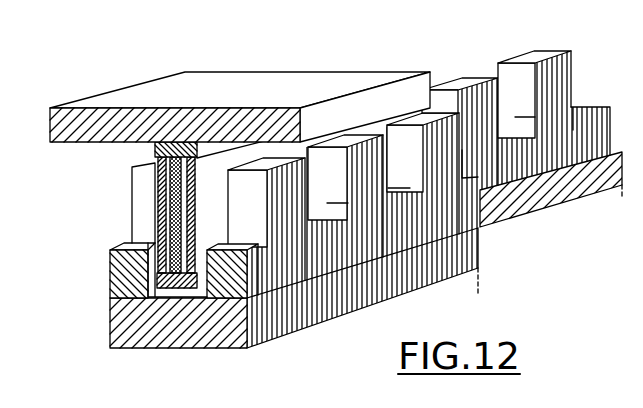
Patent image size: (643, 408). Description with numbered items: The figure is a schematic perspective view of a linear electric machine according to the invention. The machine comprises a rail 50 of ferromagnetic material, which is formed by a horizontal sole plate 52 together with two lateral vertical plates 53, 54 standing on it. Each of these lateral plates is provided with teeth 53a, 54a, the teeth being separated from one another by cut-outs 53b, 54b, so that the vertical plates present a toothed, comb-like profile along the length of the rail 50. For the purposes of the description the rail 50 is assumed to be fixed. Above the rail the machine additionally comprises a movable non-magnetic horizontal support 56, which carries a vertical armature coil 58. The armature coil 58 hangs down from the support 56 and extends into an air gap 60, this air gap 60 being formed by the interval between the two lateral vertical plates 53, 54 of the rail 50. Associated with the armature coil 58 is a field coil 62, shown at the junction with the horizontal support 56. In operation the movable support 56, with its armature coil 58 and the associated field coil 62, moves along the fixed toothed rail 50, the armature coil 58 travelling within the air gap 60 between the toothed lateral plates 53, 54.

The rail 50 is at (268, 344).
The horizontal sole plate 52 is at (118, 336).
The lateral vertical plate 53 is at (130, 272).
The teeth 53a is at (522, 60).
The cut-outs 53b is at (535, 117).
The lateral vertical plate 54 is at (290, 247).
The teeth 54a is at (280, 213).
The cut-outs 54b is at (327, 203).
The movable non-magnetic horizontal support 56 is at (280, 107).
The vertical armature coil 58 is at (218, 206).
The air gap 60 is at (205, 245).
The field coil 62 is at (183, 125).